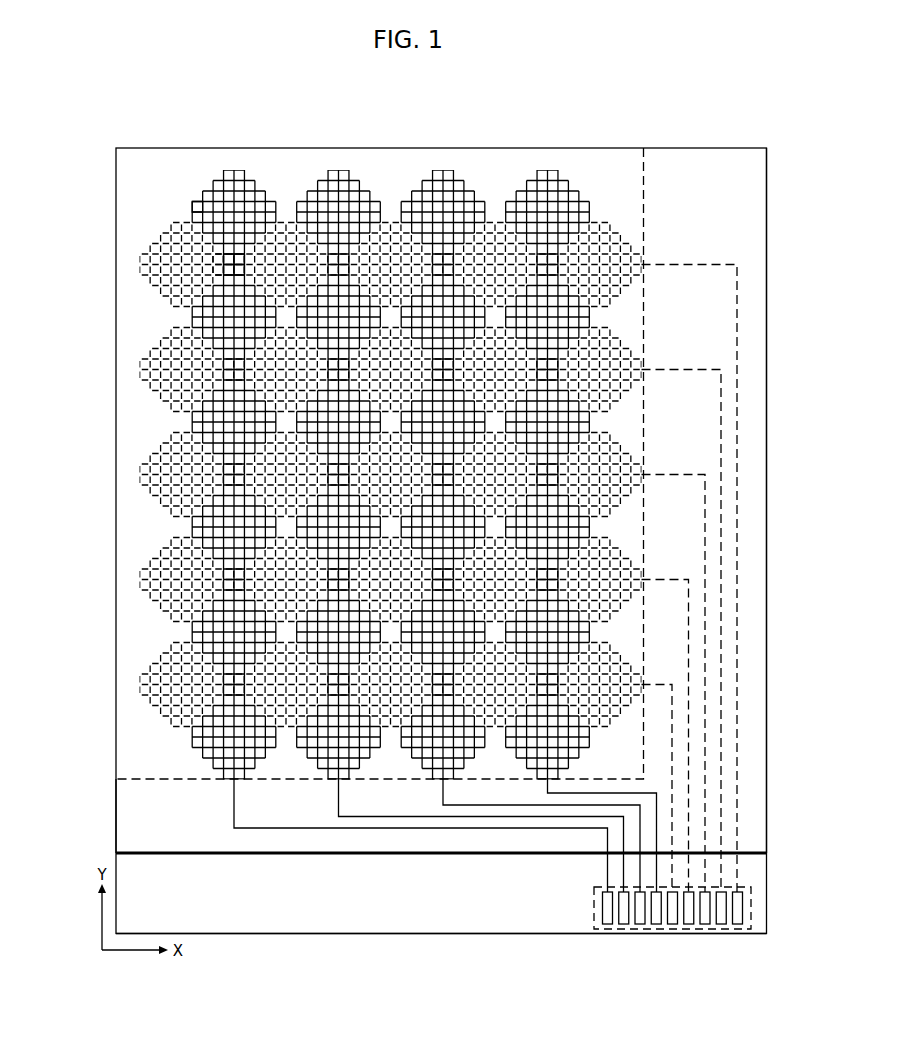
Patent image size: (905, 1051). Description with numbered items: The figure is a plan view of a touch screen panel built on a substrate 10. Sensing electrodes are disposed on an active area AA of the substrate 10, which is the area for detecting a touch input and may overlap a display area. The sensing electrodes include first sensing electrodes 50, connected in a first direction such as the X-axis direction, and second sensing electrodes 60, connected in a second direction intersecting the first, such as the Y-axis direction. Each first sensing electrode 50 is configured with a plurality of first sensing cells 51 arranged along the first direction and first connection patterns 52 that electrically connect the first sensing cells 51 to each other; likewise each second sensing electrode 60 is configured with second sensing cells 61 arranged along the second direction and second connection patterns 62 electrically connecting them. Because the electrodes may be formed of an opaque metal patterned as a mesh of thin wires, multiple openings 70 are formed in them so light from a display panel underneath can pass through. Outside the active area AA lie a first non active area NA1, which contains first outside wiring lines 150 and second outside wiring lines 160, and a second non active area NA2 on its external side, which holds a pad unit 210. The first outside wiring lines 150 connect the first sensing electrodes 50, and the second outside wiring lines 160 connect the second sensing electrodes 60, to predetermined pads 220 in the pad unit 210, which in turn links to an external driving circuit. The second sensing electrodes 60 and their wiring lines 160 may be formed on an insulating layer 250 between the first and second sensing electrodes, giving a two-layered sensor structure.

The substrate 10 is at (387, 148).
The active area AA is at (476, 158).
The first non active area NA1 is at (752, 784).
The second non active area NA2 is at (393, 910).
The first sensing electrodes 50 is at (364, 475).
The first sensing cells 51 is at (142, 280).
The first connection patterns 52 is at (226, 262).
The second sensing electrodes 60 is at (378, 448).
The second sensing cells 61 is at (250, 178).
The second connection patterns 62 is at (236, 262).
The openings 70 is at (198, 205).
The first outside wiring lines 150 is at (737, 553).
The second outside wiring lines 160 is at (312, 830).
The pad unit 210 is at (703, 930).
The pads 220 is at (608, 925).
The insulating layer 250 is at (126, 822).